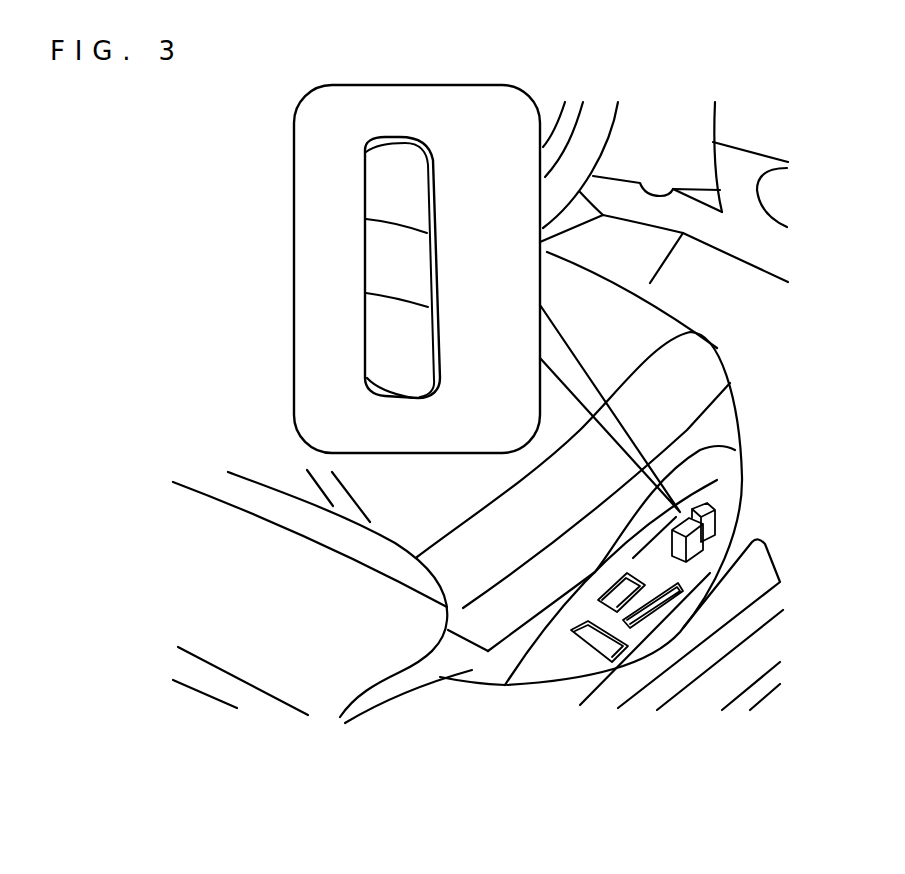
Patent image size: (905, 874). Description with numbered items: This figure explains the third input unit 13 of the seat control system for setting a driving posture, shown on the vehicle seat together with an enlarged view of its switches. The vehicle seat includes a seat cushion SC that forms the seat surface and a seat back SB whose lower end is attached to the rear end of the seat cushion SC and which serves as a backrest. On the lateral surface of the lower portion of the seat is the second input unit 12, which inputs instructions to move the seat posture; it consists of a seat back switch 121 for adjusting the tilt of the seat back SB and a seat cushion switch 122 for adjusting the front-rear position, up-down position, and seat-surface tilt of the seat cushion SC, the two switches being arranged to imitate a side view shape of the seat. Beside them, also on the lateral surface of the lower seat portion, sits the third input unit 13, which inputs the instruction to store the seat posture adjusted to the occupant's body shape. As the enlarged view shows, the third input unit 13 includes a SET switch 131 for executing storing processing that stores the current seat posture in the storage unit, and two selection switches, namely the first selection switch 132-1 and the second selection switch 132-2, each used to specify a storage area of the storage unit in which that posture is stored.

The third input unit 13 is at (155, 200).
The SET switch 131 is at (367, 183).
The first selection switch 132-1 is at (367, 252).
The second selection switch 132-2 is at (367, 333).
The second input unit 12 is at (641, 707).
The seat back switch 121 is at (591, 652).
The seat cushion switch 122 is at (666, 615).
The seat cushion SC is at (693, 363).
The seat back SB is at (283, 680).